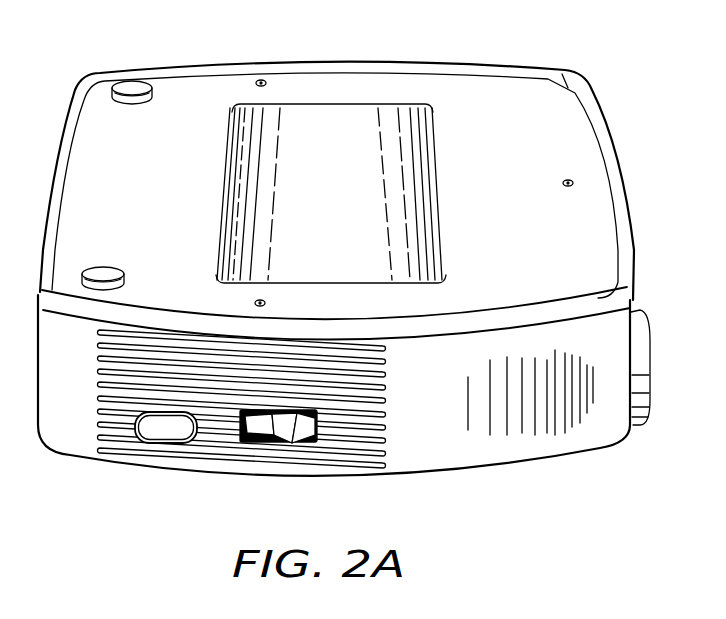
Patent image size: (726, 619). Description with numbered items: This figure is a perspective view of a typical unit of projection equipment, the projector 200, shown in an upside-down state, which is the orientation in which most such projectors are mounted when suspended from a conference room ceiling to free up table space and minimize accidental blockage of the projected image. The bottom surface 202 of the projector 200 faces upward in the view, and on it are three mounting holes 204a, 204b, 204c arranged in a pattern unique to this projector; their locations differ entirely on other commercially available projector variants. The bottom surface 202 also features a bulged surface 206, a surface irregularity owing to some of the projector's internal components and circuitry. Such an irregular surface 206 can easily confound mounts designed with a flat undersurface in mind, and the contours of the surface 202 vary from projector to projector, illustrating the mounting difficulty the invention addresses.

The projector 200 is at (452, 416).
The bottom surface 202 is at (155, 156).
The mounting hole 204a is at (267, 82).
The mounting hole 204b is at (272, 303).
The mounting hole 204c is at (560, 182).
The bulged surface 206 is at (263, 226).